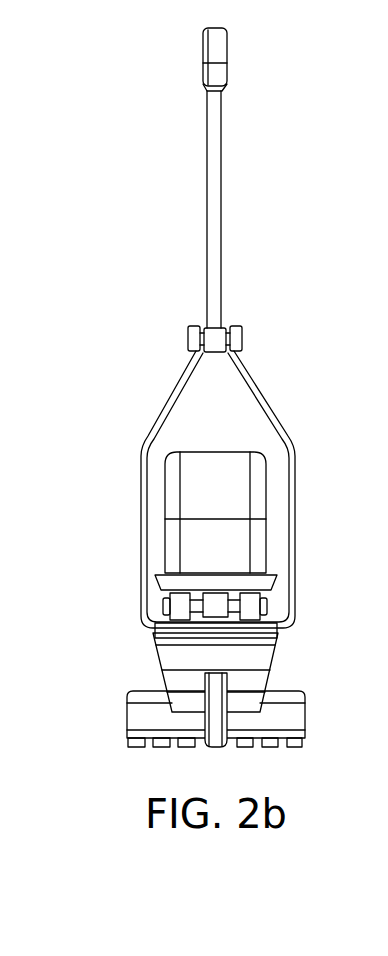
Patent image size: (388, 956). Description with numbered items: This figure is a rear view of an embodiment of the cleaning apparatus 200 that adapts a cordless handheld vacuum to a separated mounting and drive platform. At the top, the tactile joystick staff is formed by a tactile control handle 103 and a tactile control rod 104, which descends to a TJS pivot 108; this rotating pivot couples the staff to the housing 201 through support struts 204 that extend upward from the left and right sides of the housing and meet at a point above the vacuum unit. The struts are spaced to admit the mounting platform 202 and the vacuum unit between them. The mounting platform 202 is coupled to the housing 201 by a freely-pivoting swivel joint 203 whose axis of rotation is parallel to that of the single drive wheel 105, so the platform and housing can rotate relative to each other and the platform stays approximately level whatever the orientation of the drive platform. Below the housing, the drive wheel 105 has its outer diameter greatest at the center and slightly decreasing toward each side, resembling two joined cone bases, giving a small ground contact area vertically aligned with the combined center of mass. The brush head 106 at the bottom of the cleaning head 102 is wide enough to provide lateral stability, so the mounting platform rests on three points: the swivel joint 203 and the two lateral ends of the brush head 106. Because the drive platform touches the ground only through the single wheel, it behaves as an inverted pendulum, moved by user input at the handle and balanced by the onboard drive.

The cleaning head 102 is at (292, 666).
The tactile control handle 103 is at (229, 60).
The tactile control rod 104 is at (224, 205).
The drive wheel 105 is at (240, 725).
The brush head 106 is at (127, 718).
The TJS pivot 108 is at (244, 339).
The vacuum unit 200 is at (189, 433).
The housing 201 is at (165, 648).
The mounting platform 202 is at (237, 583).
The swivel joint 203 is at (161, 605).
The support struts 204 is at (277, 400).